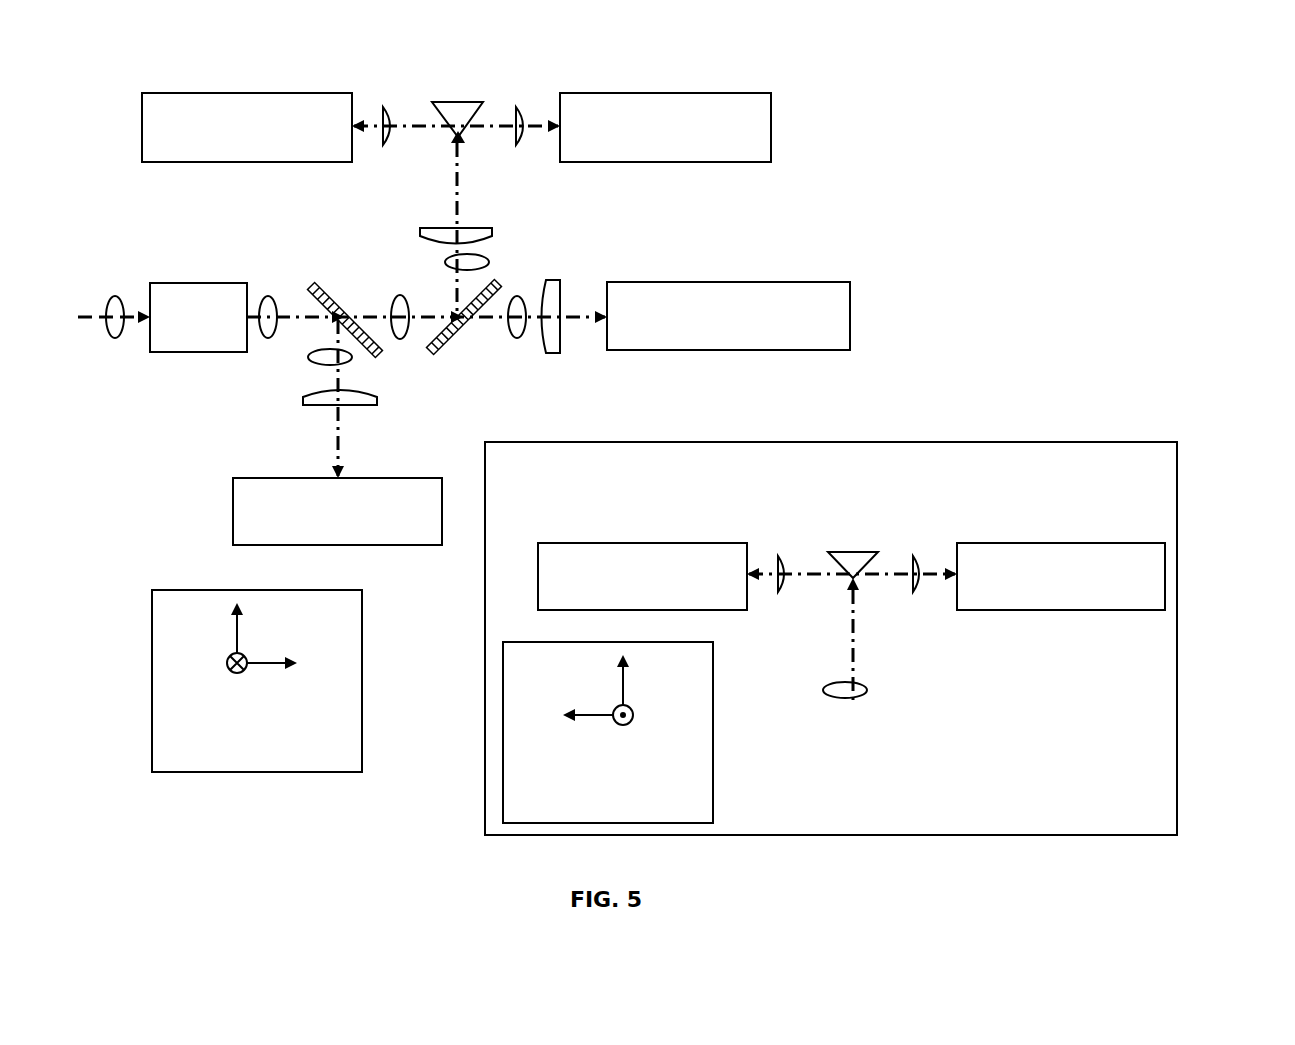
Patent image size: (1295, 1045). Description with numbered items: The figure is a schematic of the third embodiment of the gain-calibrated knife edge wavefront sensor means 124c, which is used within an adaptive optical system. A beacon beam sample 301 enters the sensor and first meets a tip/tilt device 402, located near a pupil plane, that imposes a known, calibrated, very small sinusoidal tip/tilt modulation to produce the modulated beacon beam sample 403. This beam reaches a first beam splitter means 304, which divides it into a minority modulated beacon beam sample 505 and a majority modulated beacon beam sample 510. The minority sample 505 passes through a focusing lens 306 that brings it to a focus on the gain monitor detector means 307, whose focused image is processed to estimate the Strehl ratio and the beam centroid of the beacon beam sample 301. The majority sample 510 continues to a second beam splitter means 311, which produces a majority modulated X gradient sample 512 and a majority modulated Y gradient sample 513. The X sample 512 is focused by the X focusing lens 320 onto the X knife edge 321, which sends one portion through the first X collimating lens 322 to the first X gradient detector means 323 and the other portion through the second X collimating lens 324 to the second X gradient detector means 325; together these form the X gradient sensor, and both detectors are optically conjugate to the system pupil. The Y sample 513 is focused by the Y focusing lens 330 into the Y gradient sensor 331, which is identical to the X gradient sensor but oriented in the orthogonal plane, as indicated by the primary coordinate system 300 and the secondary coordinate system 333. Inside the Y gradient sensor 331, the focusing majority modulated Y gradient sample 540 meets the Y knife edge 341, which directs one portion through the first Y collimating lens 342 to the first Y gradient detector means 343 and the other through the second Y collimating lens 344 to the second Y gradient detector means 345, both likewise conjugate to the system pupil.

The gain-calibrated knife edge wavefront sensor means 124c is at (1172, 91).
The primary coordinate system 300 is at (338, 772).
The beacon beam sample 301 is at (108, 343).
The tip/tilt device 402 is at (182, 350).
The modulated beacon beam sample 403 is at (265, 290).
The first beam splitter means 304 is at (312, 285).
The majority modulated beacon beam sample 510 is at (393, 292).
The minority modulated beacon beam sample 505 is at (313, 362).
The focusing lens 306 is at (312, 405).
The gain monitor detector means 307 is at (232, 508).
The X focusing lens 320 is at (427, 225).
The majority modulated X gradient sample 512 is at (488, 258).
The X knife edge 321 is at (452, 102).
The first X collimating lens 322 is at (388, 108).
The second X collimating lens 324 is at (525, 108).
The first X gradient detector means 323 is at (245, 162).
The second X gradient detector means 325 is at (773, 130).
The second beam splitter means 311 is at (442, 350).
The majority modulated Y gradient sample 513 is at (517, 348).
The Y focusing lens 330 is at (563, 352).
The Y gradient sensor 331 is at (865, 440).
The Y knife edge 341 is at (848, 552).
The first Y collimating lens 342 is at (782, 555).
The second Y collimating lens 344 is at (925, 555).
The first Y gradient detector means 343 is at (617, 542).
The second Y gradient detector means 345 is at (1030, 542).
The focusing majority modulated Y gradient sample 540 is at (832, 697).
The secondary coordinate system 333 is at (713, 777).